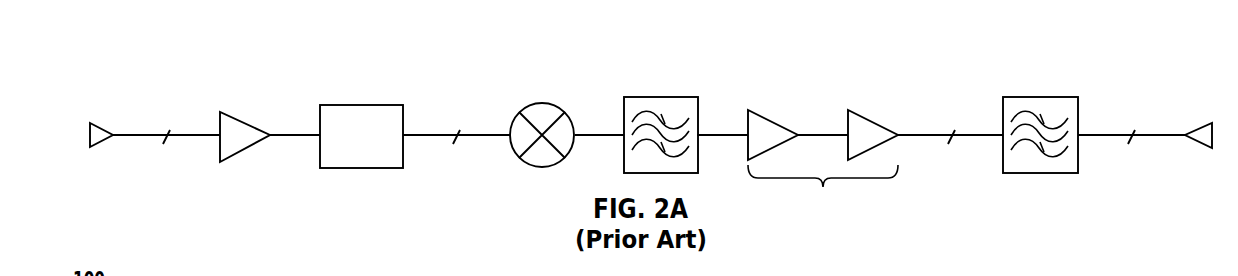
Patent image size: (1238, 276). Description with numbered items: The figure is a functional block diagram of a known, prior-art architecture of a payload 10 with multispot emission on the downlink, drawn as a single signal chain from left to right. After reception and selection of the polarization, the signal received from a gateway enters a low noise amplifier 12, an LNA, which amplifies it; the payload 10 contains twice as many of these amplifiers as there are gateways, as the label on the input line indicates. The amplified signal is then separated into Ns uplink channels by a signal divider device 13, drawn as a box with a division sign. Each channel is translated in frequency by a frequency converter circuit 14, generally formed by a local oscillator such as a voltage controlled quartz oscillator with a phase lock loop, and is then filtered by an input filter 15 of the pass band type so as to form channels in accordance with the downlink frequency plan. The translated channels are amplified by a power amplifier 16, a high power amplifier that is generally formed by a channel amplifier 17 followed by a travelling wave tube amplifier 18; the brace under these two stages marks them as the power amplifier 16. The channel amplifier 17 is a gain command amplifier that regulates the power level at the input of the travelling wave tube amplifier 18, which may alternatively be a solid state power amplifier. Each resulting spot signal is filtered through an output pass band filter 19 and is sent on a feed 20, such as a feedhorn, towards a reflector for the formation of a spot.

The payload 10 is at (139, 47).
The low noise amplifier 12 is at (233, 113).
The signal divider device 13 is at (360, 105).
The frequency converter circuit 14 is at (543, 102).
The input filter 15 is at (662, 97).
The power amplifier 16 is at (823, 192).
The channel amplifier 17 is at (773, 120).
The travelling wave tube amplifier 18 is at (860, 112).
The output pass band filter 19 is at (1042, 97).
The feed 20 is at (1197, 123).